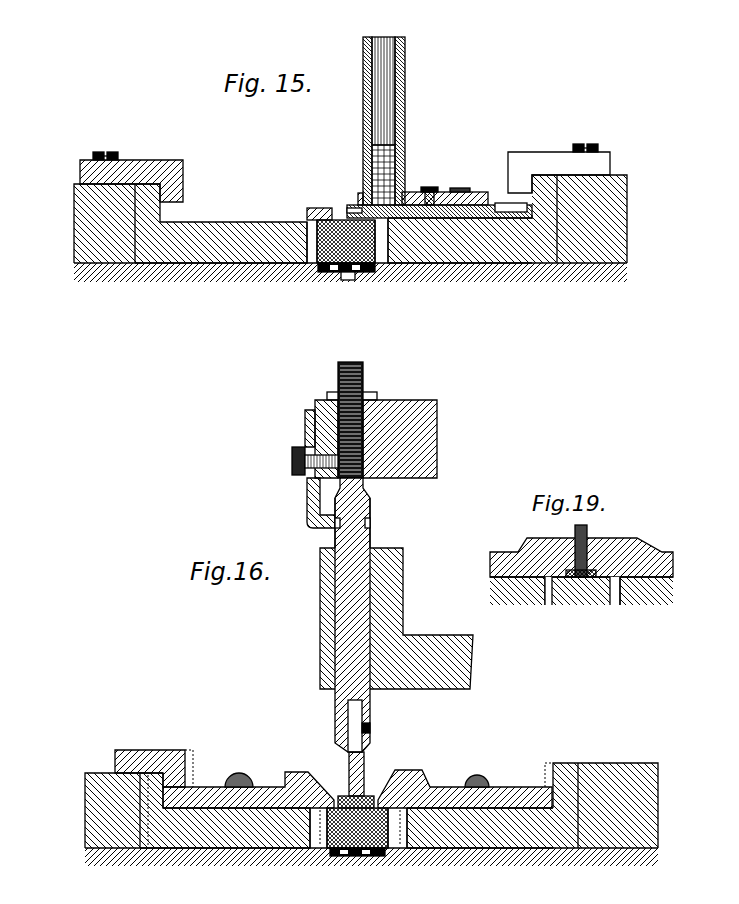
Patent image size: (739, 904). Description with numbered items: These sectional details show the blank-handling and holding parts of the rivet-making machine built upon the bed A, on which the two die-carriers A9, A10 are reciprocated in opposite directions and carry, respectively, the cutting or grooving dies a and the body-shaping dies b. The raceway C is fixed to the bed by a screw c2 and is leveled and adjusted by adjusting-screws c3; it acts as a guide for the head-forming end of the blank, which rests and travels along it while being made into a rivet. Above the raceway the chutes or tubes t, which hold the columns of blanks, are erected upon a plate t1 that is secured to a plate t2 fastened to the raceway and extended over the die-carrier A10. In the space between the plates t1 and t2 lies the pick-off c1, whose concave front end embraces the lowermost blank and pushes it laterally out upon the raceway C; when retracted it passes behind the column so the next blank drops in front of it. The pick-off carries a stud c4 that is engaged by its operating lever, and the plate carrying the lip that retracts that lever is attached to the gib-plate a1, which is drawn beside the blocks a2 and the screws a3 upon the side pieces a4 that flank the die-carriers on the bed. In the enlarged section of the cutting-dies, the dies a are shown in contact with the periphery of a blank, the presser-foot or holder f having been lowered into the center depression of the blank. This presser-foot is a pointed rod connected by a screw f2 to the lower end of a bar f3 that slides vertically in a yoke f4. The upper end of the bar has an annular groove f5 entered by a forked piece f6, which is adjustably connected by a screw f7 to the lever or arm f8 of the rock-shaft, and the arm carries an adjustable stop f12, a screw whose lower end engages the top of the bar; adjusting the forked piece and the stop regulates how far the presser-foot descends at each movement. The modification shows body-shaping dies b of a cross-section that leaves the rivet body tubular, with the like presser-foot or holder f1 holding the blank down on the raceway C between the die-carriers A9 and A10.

In FIG. 16, the cutting or grooving dies a is at (265, 787).
In FIG. 15, the gib-plate a1 is at (169, 160).
In FIG. 16, the gib-plate a1 is at (170, 750).
In FIG. 15, the block a2 is at (137, 193).
In FIG. 16, the block a2 is at (165, 777).
In FIG. 15, the screw a3 is at (105, 151).
In FIG. 15, the bed block a4 is at (73, 235).
In FIG. 16, the bed block a4 is at (86, 817).
In FIG. 15, the bed A is at (350, 285).
In FIG. 16, the bed A is at (371, 870).
In FIG. 15, the die-carrier A9 is at (188, 264).
In FIG. 16, the die-carrier A9 is at (227, 843).
In FIG. 19, the die-carrier A9 is at (517, 601).
In FIG. 15, the die-carrier A10 is at (495, 247).
In FIG. 16, the die-carrier A10 is at (478, 837).
In FIG. 19, the die-carrier A10 is at (646, 599).
In FIG. 15, the raceway C is at (307, 250).
In FIG. 16, the raceway C is at (310, 853).
In FIG. 19, the raceway C is at (582, 601).
In FIG. 15, the pick-off c1 is at (447, 193).
In FIG. 15, the screw c2 is at (340, 270).
In FIG. 16, the screw c2 is at (360, 857).
In FIG. 15, the adjusting-screws c3 is at (312, 262).
In FIG. 16, the adjusting-screws c3 is at (328, 855).
In FIG. 15, the stud c4 is at (442, 190).
In FIG. 15, the chutes or tubes t is at (402, 128).
In FIG. 15, the plate t1 is at (410, 198).
In FIG. 15, the plate t2 is at (437, 223).
In FIG. 16, the presser-foot or holder f is at (364, 780).
In FIG. 19, the presser-foot or holder f1 is at (586, 536).
In FIG. 16, the screw f2 is at (377, 730).
In FIG. 16, the bar f3 is at (347, 645).
In FIG. 16, the yoke f4 is at (403, 590).
In FIG. 16, the annular groove f5 is at (370, 521).
In FIG. 16, the forked piece f6 is at (307, 507).
In FIG. 16, the screw f7 is at (292, 467).
In FIG. 16, the lever or arm f8 is at (437, 432).
In FIG. 16, the adjustable stop f12 is at (363, 373).
In FIG. 19, the body-shaping dies b is at (581, 547).